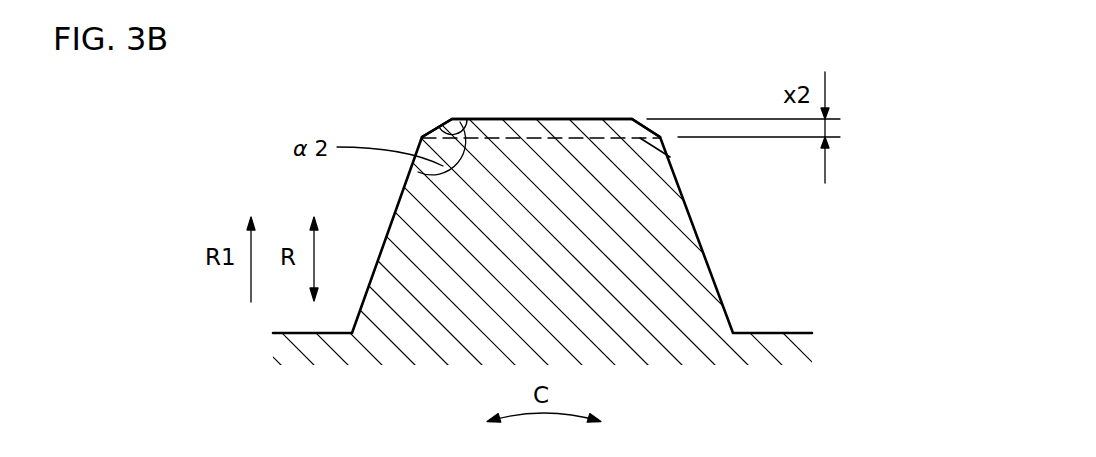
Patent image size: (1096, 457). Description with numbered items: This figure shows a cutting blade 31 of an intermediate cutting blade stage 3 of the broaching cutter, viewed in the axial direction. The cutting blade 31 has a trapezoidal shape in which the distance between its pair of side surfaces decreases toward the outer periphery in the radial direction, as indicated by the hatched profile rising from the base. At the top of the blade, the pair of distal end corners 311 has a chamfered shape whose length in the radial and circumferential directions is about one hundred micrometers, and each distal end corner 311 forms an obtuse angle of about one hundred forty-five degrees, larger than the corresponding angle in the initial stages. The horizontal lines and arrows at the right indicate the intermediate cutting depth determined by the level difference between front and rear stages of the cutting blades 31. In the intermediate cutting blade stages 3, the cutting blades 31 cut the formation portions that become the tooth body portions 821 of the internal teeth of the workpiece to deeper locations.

The intermediate cutting blade stage 3 is at (514, 108).
The cutting blade 31 is at (547, 187).
The distal end corner 311 is at (656, 131).
The tooth body portion 821 is at (643, 287).